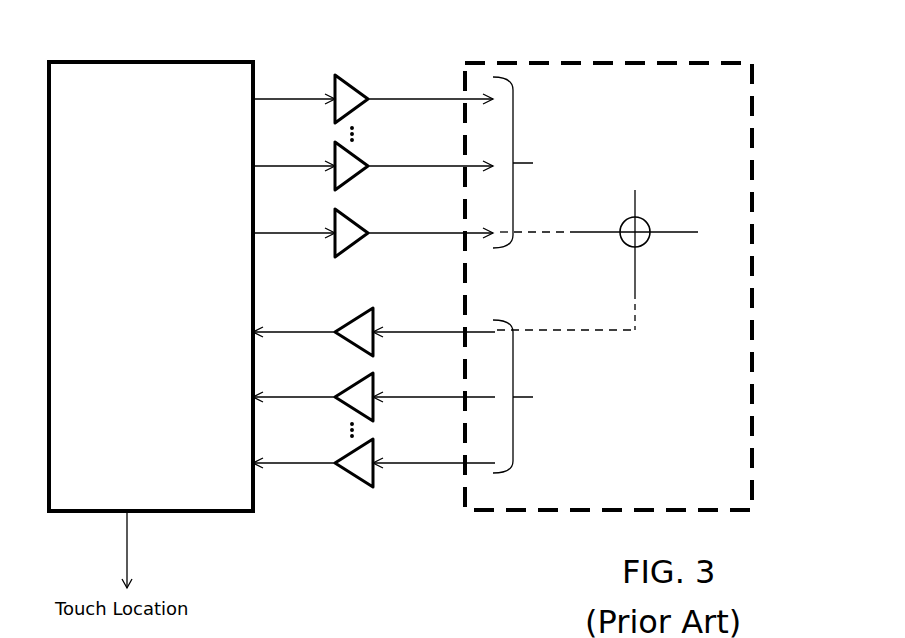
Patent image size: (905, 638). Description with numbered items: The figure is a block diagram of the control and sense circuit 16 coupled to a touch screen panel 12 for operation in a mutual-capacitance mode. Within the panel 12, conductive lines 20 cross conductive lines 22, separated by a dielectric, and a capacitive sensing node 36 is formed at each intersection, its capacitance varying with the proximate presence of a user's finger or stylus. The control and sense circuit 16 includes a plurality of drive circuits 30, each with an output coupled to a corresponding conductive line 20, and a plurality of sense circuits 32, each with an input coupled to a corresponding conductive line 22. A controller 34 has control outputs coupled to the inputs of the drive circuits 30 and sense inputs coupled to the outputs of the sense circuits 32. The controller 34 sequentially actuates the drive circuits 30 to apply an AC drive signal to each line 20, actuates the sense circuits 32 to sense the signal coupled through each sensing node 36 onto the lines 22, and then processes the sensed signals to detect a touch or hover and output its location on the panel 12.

The touch screen panel 12 is at (515, 512).
The control and sense circuit 16 is at (280, 513).
The conductive lines 20 is at (668, 190).
The conductive lines 22 is at (697, 375).
The drive circuits 30 is at (354, 86).
The sense circuits 32 is at (352, 475).
The controller 34 is at (167, 277).
The capacitive sensing node 36 is at (625, 243).